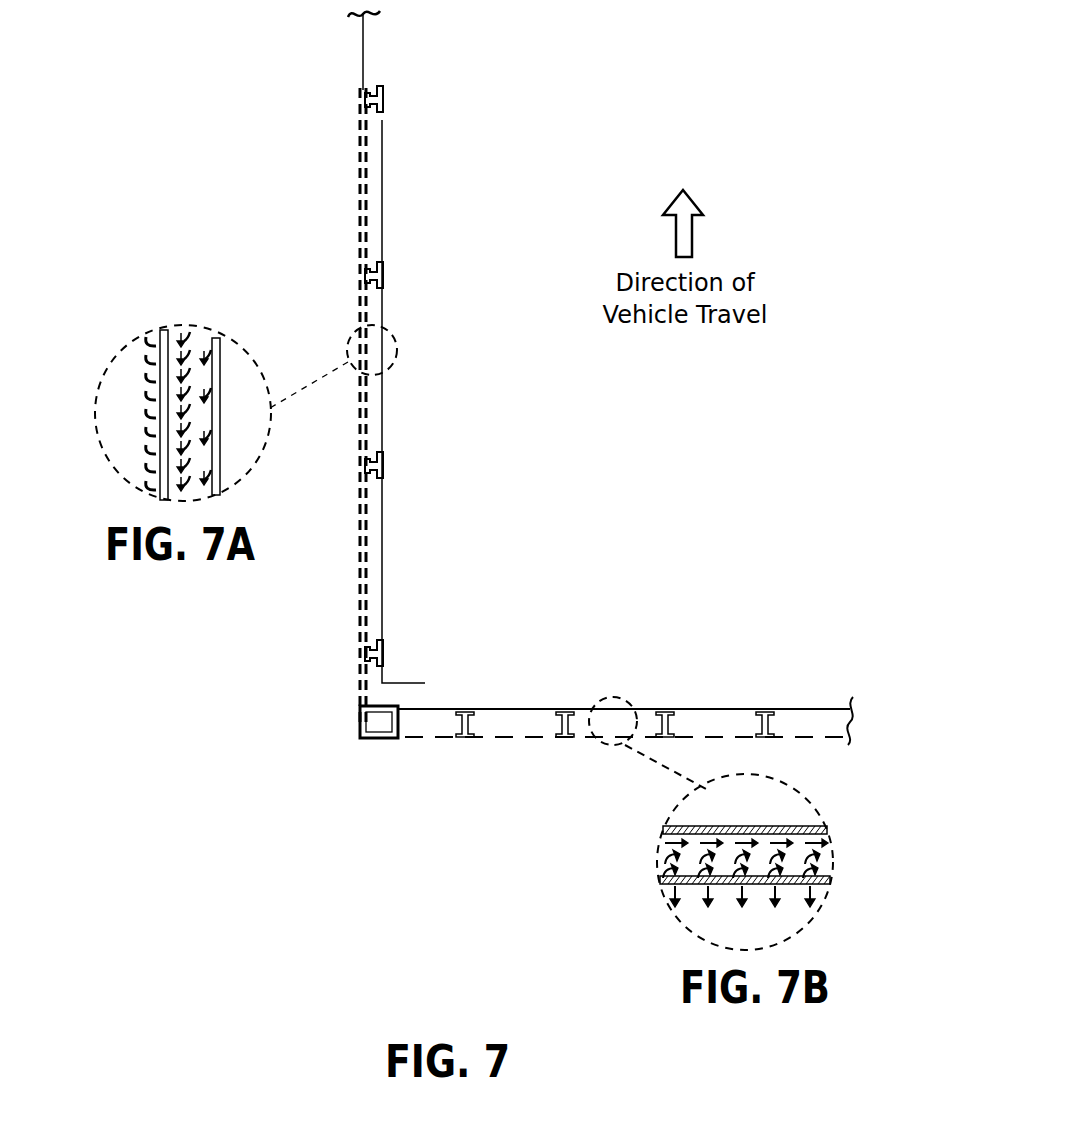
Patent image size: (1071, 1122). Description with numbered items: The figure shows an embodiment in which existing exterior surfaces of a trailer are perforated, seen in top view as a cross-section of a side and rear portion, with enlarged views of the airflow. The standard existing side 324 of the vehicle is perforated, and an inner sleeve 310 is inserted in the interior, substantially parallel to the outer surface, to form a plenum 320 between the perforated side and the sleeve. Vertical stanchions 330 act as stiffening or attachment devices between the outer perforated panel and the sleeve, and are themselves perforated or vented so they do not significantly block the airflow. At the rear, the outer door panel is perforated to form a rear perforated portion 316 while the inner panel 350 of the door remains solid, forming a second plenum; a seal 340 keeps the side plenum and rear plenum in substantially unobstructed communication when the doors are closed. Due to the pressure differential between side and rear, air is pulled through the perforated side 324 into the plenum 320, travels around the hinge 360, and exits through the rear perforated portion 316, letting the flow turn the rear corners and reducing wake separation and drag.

In FIG. 7, the inner sleeve 310 is at (445, 401).
In FIG. 7A, the inner sleeve 310 is at (268, 399).
In FIG. 7, the rear perforated portion 316 is at (625, 787).
In FIG. 7B, the rear perforated portion 316 is at (686, 915).
In FIG. 7, the plenum 320 is at (438, 400).
In FIG. 7A, the plenum 320 is at (153, 362).
In FIG. 7, the perforated side 324 is at (300, 405).
In FIG. 7A, the perforated side 324 is at (101, 389).
In FIG. 7, the vertical stanchion 330 is at (436, 376).
In FIG. 7, the seal 340 is at (625, 694).
In FIG. 7, the inner panel 350 is at (624, 676).
In FIG. 7B, the inner panel 350 is at (701, 819).
In FIG. 7, the hinge 360 is at (328, 772).